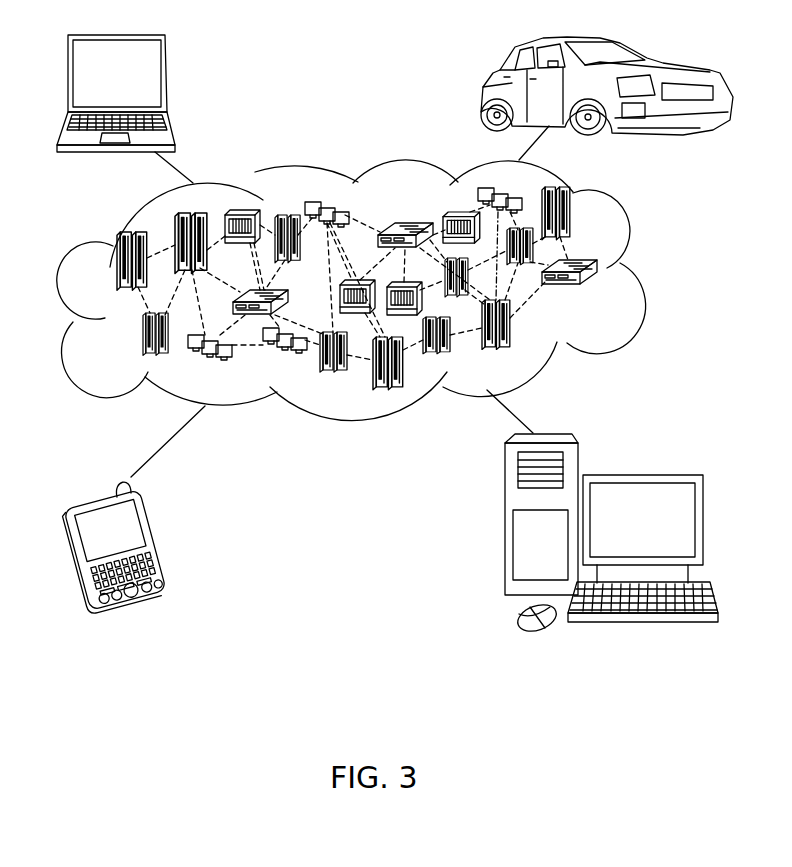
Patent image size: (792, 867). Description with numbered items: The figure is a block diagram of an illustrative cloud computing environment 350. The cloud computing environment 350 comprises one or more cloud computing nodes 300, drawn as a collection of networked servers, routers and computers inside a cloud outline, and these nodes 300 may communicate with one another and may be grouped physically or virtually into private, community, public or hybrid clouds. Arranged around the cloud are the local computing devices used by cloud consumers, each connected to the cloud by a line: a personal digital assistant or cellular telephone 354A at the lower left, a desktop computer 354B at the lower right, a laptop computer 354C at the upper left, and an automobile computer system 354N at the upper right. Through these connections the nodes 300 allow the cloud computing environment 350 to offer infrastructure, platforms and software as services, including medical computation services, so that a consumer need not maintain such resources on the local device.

The cloud computing nodes 300 is at (604, 294).
The cloud computing environment 350 is at (640, 268).
The personal digital assistant (PDA) or cellular telephone 354A is at (160, 539).
The desktop computer 354B is at (648, 466).
The laptop computer 354C is at (166, 78).
The automobile computer system 354N is at (480, 90).